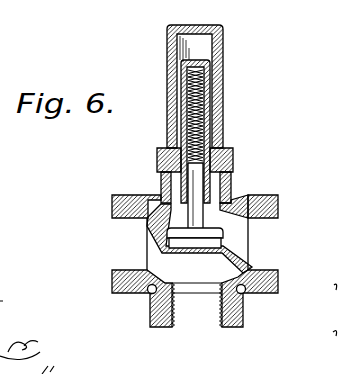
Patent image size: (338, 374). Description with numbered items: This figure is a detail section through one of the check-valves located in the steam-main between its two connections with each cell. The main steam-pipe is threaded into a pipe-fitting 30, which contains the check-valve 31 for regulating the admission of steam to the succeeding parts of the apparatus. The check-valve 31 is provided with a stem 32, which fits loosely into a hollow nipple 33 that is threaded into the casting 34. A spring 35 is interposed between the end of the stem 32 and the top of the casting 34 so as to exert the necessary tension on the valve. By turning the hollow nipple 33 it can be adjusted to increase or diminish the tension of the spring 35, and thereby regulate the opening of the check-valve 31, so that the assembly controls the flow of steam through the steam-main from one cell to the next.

The pipe-fitting 30 is at (116, 195).
The check-valve 31 is at (190, 227).
The stem 32 is at (227, 142).
The hollow nipple 33 is at (223, 92).
The casting 34 is at (221, 124).
The spring 35 is at (221, 62).